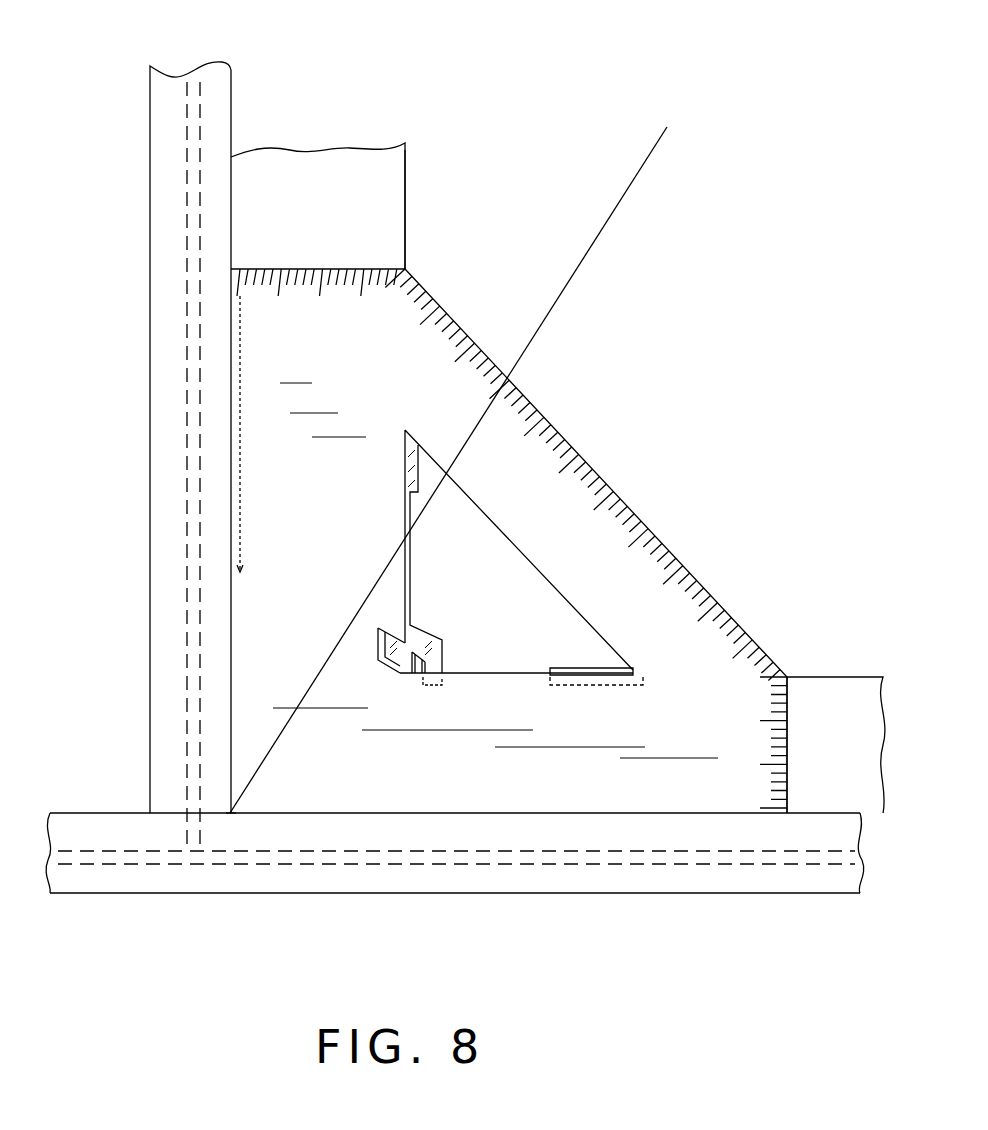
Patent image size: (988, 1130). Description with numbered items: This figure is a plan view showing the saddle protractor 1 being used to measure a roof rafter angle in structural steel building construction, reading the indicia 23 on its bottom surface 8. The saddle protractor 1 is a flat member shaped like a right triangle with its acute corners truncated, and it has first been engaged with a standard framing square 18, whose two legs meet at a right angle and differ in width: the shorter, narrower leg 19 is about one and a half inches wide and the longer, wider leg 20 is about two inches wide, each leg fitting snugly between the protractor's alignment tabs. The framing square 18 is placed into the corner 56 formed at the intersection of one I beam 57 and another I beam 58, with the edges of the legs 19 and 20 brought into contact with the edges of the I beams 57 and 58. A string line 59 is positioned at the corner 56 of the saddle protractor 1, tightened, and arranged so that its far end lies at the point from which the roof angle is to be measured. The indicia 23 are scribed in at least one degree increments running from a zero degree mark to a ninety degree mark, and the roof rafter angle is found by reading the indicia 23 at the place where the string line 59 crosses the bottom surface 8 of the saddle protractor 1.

The saddle protractor 1 is at (733, 615).
The bottom surface 8 is at (583, 583).
The standard framing square 18 is at (405, 205).
The shorter, narrower leg 19 is at (815, 715).
The longer, wider leg 20 is at (313, 190).
The indicia 23 is at (587, 463).
The corner 56 is at (232, 812).
The I beam 57 is at (231, 120).
The I beam 58 is at (707, 898).
The string line 59 is at (610, 223).